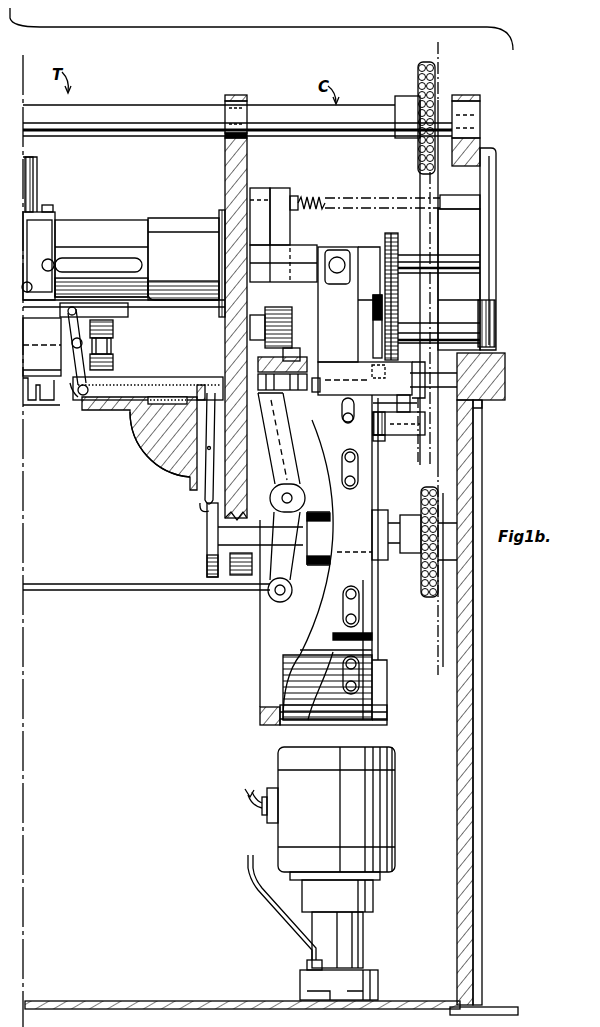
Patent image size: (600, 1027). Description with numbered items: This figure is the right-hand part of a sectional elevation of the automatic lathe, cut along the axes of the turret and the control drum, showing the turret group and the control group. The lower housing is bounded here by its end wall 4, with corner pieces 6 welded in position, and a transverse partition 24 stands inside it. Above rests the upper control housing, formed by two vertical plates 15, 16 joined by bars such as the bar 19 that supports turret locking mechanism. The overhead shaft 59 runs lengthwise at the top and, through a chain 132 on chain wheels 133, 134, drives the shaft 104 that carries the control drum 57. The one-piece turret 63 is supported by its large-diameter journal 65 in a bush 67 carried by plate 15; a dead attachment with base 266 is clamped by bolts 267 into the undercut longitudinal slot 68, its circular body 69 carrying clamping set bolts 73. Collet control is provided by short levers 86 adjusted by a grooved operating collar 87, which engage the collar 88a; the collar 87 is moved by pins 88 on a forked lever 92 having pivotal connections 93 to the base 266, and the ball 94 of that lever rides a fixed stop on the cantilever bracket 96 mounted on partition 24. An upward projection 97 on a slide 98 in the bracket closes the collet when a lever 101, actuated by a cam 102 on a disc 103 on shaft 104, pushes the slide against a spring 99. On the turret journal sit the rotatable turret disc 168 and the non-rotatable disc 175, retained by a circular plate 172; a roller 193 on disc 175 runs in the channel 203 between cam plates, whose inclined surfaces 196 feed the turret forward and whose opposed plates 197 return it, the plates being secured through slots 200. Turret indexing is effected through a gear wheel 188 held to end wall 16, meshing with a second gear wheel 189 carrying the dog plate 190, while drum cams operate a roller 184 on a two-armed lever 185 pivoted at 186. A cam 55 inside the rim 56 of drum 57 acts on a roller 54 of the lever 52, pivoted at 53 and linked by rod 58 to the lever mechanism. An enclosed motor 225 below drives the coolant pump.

The end wall 4 is at (463, 486).
The corner pieces 6 is at (478, 668).
The vertical metal plate 15 is at (248, 172).
The vertical metal plate 16 is at (476, 146).
The bar 19 is at (260, 290).
The transverse partition 24 is at (238, 497).
The cam lever 52 is at (290, 457).
The pivotal support 53 is at (292, 492).
The roller 54 is at (320, 383).
The cam 55 is at (262, 368).
The rim 56 is at (313, 373).
The control drum 57 is at (366, 500).
The rod 58 is at (66, 591).
The overhead shaft 59 is at (128, 115).
The turret 63 is at (116, 228).
The bearing journal 65 is at (181, 230).
The bush 67 is at (227, 203).
The undercut longitudinal slot 68 is at (82, 260).
The circular body 69 is at (37, 176).
The clamping set bolt 73 is at (27, 159).
The short lever 86 is at (112, 341).
The grooved operating collar 87 is at (88, 374).
The pin 88 is at (113, 326).
The collar 88a is at (113, 356).
The forked lever 92 is at (78, 396).
The pivotal connection 93 is at (68, 314).
The ball 94 is at (113, 400).
The cantilever bracket 96 is at (176, 443).
The upward projection 97 is at (73, 400).
The slide 98 is at (120, 417).
The spring 99 is at (180, 402).
The lever 101 is at (206, 470).
The cam 102 is at (207, 521).
The disc 103 is at (213, 533).
The shaft 104 is at (206, 549).
The chain 132 is at (436, 452).
The chain wheel 133 is at (418, 160).
The chain wheel 134 is at (440, 578).
The turret disc 168 is at (262, 197).
The circular plate 172 is at (300, 238).
The non-rotatable disc 175 is at (286, 190).
The roller 184 is at (378, 432).
The two armed lever 185 is at (405, 410).
The pivotal mounting 186 is at (447, 380).
The gear wheel 188 is at (387, 231).
The second gear wheel 189 is at (428, 313).
The dog plate 190 is at (373, 333).
The roller 193 is at (283, 347).
The inclined surface 196 is at (323, 645).
The opposed plate 197 is at (296, 678).
The slot 200 is at (360, 607).
The channel 203 is at (296, 725).
The enclosed motor 225 is at (284, 763).
The base 266 is at (130, 312).
The bolt 267 is at (50, 258).